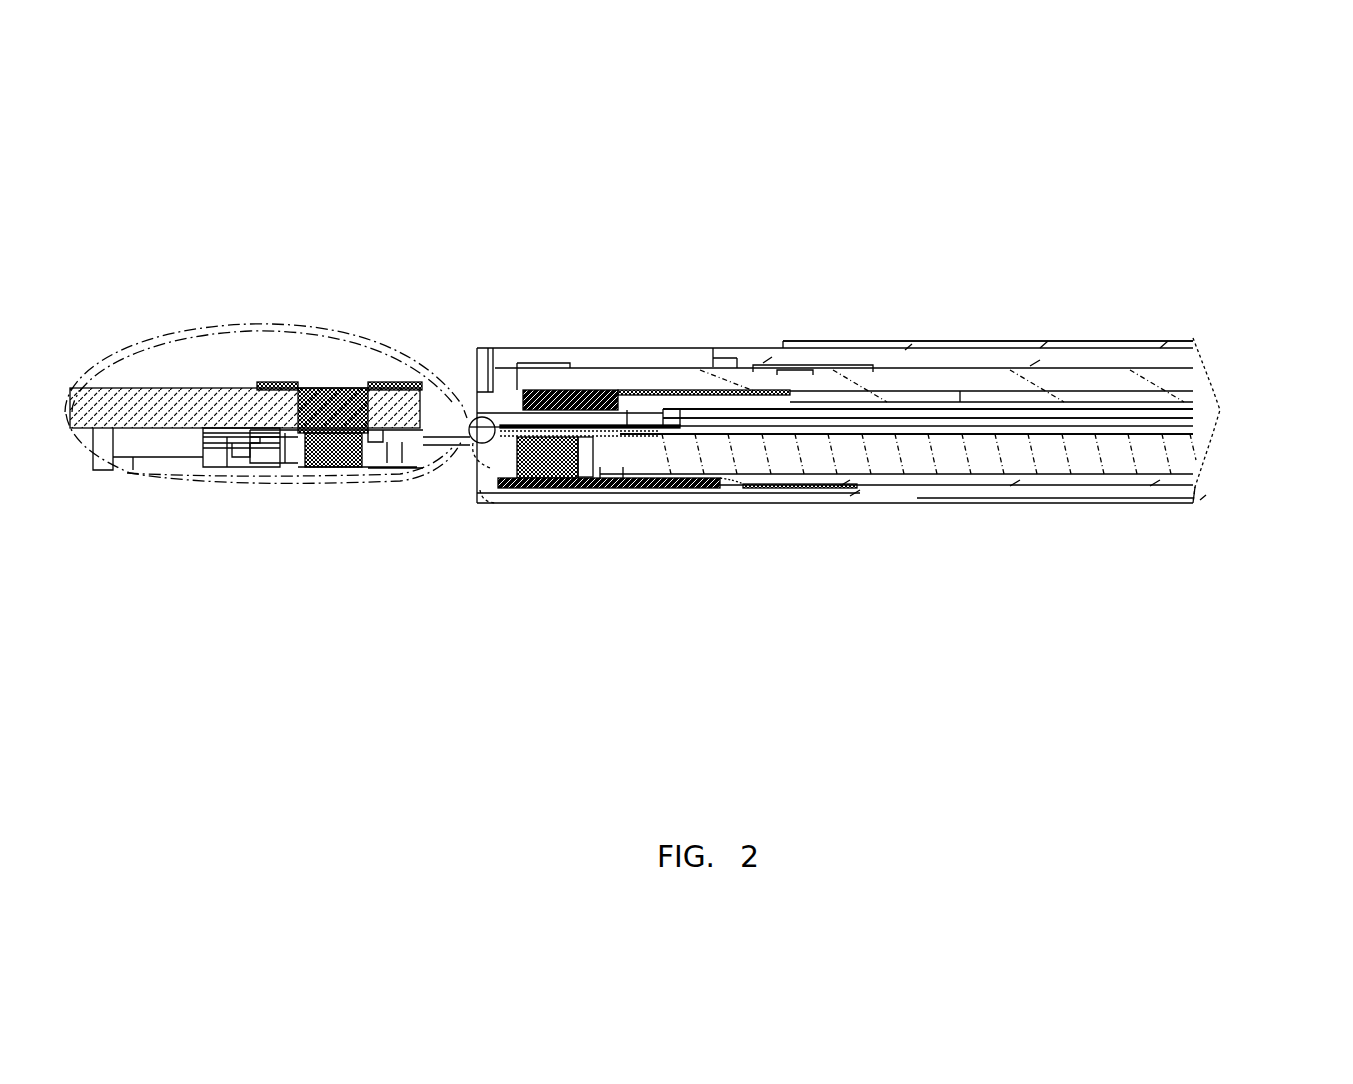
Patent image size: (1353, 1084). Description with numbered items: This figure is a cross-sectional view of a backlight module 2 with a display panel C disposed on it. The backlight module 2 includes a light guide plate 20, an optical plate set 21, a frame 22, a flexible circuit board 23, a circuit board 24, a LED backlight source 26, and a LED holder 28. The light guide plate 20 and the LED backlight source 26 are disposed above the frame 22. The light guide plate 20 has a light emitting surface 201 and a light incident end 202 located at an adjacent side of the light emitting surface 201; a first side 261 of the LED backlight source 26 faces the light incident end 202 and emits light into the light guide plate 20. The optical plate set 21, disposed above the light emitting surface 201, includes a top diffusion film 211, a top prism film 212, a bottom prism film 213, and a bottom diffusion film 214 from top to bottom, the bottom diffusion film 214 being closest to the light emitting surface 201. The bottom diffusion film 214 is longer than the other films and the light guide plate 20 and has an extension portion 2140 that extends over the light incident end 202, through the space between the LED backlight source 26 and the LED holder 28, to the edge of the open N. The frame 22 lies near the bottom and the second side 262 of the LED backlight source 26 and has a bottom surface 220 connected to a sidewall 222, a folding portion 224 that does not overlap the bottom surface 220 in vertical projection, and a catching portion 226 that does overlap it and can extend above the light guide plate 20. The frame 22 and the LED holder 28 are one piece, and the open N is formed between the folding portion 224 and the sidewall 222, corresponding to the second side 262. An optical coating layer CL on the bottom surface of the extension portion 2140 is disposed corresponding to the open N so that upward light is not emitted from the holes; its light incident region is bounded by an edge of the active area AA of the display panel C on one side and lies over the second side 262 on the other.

The backlight module 2 is at (180, 144).
The light guide plate 20 is at (947, 463).
The light emitting surface 201 is at (1180, 437).
The light incident end 202 is at (625, 440).
The optical plate set 21 is at (1327, 388).
The top diffusion film 211 is at (1208, 413).
The top prism film 212 is at (1208, 418).
The bottom prism film 213 is at (1208, 423).
The bottom diffusion film 214 is at (1208, 432).
The extension portion 2140 is at (557, 425).
The frame 22 is at (532, 493).
The bottom surface 220 is at (500, 493).
The sidewall 222 is at (493, 470).
The folding portion 224 is at (450, 437).
The catching portion 226 is at (525, 390).
The flexible circuit board 23 is at (155, 332).
The circuit board 24 is at (162, 413).
The LED backlight source 26 is at (548, 470).
The first side 261 is at (582, 453).
The second side 262 is at (482, 455).
The LED holder 28 is at (510, 420).
The open N is at (470, 417).
The display panel C is at (822, 345).
The optical coating layer CL is at (645, 445).
The active area AA is at (1192, 333).